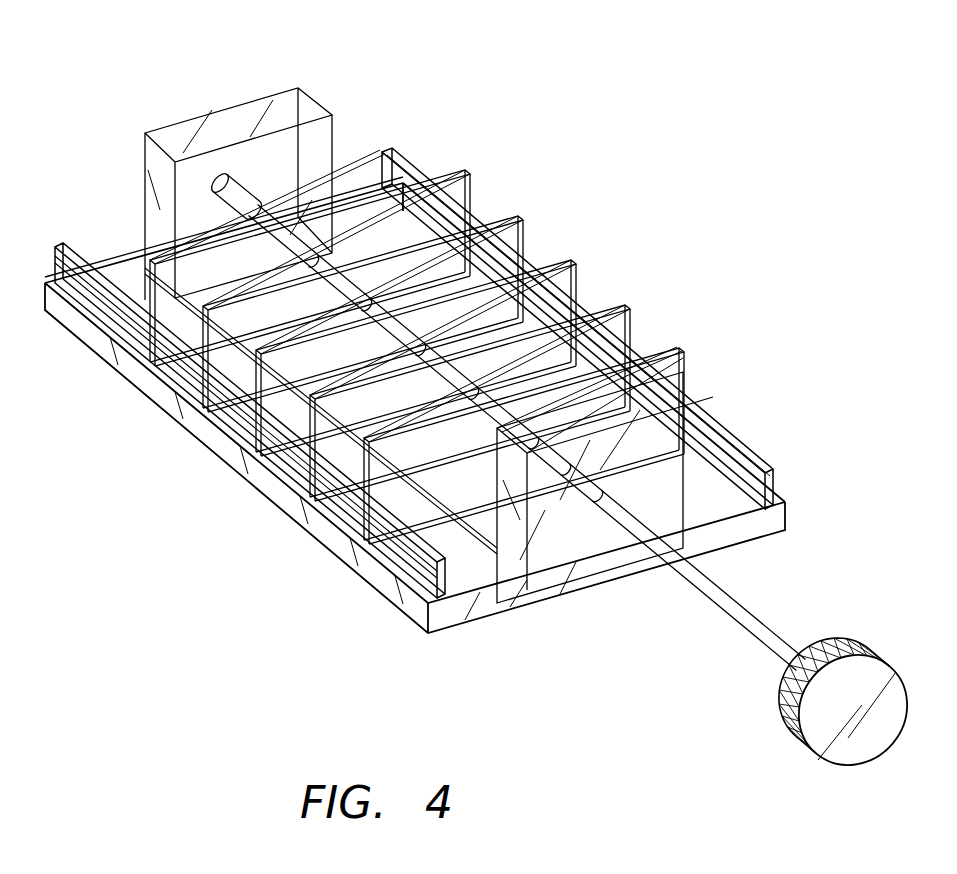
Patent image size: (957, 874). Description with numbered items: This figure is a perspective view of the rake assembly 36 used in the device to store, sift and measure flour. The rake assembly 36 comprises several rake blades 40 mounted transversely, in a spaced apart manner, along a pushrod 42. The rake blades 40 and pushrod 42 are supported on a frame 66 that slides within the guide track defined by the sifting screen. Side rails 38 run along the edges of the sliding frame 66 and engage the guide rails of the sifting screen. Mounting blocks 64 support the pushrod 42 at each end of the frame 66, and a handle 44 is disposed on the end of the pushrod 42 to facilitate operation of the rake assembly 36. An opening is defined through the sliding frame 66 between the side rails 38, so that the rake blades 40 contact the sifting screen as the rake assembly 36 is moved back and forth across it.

The rake assembly 36 is at (692, 126).
The side rails 38 is at (78, 250).
The rake blades 40 is at (685, 365).
The pushrod 42 is at (743, 635).
The handle 44 is at (830, 767).
The mounting blocks 64 is at (230, 102).
The frame 66 is at (490, 618).